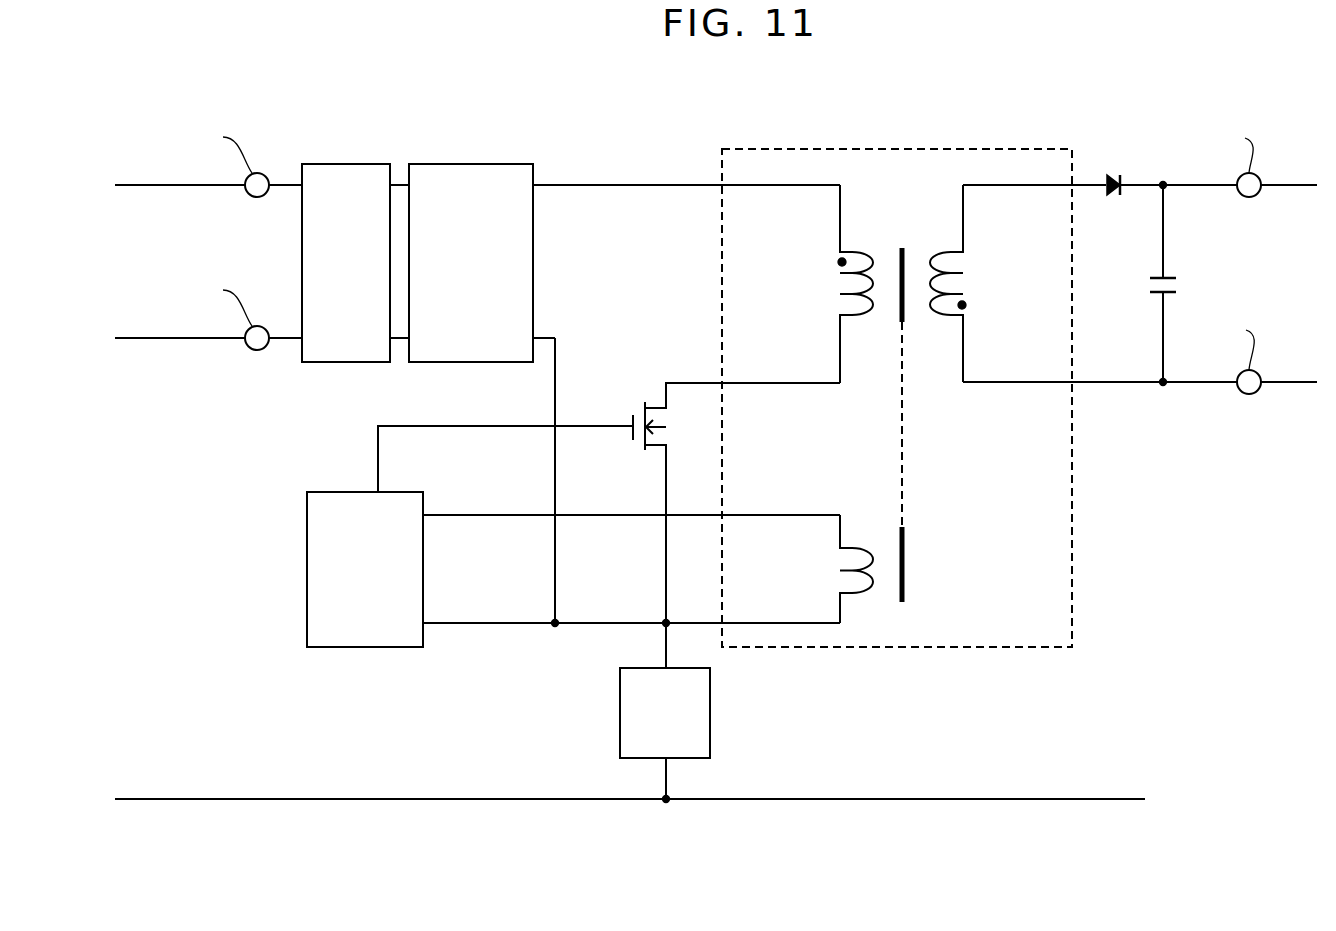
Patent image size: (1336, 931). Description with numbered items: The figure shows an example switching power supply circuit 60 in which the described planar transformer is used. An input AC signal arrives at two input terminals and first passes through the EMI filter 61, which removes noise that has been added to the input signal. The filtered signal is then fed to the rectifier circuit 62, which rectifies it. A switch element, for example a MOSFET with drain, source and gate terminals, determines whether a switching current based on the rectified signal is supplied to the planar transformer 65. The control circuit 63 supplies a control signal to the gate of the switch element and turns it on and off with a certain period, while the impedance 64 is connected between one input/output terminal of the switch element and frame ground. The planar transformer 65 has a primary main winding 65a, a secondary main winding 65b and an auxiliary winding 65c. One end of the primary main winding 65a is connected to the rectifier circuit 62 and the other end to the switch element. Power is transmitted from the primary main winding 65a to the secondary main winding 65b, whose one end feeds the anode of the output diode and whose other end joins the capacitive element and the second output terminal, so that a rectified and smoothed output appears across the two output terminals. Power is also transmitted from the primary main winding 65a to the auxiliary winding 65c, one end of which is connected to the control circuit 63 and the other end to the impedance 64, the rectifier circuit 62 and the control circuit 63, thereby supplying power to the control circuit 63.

The switching power supply circuit 60 is at (1303, 92).
The EMI filter 61 is at (345, 164).
The rectifier circuit 62 is at (486, 164).
The control circuit 63 is at (345, 492).
The impedance 64 is at (620, 715).
The planar transformer 65 is at (938, 149).
The primary main winding 65a is at (852, 250).
The secondary main winding 65b is at (950, 250).
The auxiliary winding 65c is at (852, 547).